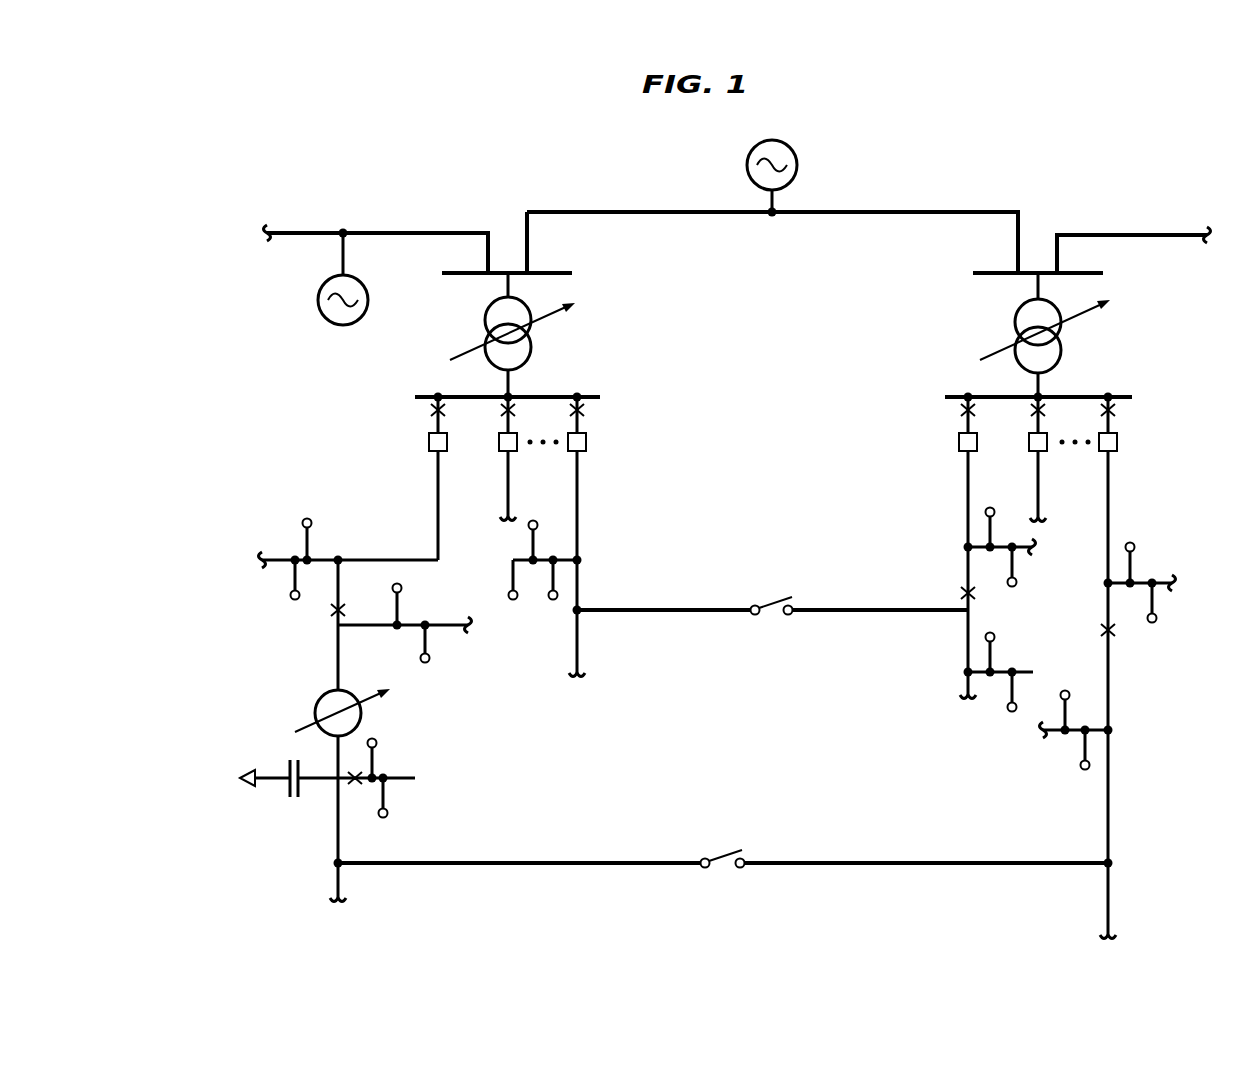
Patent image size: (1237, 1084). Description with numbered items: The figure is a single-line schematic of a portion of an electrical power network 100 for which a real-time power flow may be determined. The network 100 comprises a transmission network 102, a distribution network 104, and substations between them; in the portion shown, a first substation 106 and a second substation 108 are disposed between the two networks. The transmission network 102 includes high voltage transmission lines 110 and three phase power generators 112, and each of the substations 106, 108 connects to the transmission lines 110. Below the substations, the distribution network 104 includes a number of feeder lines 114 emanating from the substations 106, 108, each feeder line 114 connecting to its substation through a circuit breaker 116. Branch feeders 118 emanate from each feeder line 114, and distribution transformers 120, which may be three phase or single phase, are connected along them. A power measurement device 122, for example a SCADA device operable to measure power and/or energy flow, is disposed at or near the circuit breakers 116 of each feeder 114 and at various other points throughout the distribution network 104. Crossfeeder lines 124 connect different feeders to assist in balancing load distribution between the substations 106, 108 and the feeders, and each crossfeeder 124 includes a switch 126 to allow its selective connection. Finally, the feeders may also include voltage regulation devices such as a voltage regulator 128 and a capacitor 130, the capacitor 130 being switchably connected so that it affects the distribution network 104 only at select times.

The electrical power network 100 is at (1113, 162).
The transmission network 102 is at (244, 236).
The distribution network 104 is at (232, 431).
The first substation 106 is at (484, 325).
The second substation 108 is at (1064, 354).
The high voltage transmission lines 110 is at (411, 228).
The three phase power generators 112 is at (797, 167).
The feeder lines 114 is at (1140, 495).
The circuit breakers 116 is at (429, 442).
The branch feeders 118 is at (330, 560).
The distribution transformers 120 is at (304, 523).
The power measurement device 122 is at (432, 398).
The crossfeeder lines 124 is at (640, 614).
The switch 126 is at (770, 603).
The voltage regulator 128 is at (316, 710).
The capacitor 130 is at (283, 770).